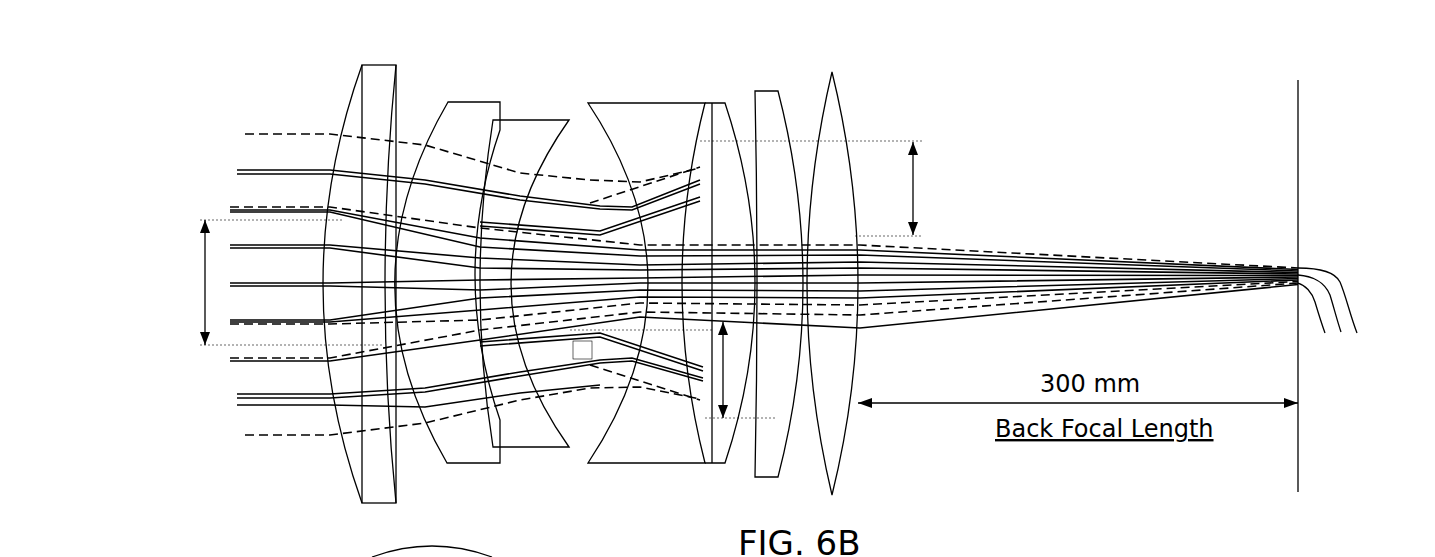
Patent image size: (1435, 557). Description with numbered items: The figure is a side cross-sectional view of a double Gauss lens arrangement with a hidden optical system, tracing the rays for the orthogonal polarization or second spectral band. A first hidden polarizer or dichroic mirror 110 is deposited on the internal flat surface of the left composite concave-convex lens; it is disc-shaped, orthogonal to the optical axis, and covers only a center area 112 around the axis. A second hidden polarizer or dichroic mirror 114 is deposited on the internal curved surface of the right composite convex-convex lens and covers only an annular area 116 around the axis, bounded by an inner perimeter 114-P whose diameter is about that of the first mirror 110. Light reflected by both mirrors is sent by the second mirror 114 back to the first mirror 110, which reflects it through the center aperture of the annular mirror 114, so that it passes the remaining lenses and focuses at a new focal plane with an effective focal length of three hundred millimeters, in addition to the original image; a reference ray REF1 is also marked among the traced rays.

The first hidden polarizer or dichroic mirror 110 is at (366, 224).
The center area 112 is at (203, 284).
The second hidden polarizer or dichroic mirror 114 is at (704, 168).
The inner perimeter 114-P is at (757, 237).
The annular area 116 is at (922, 184).
The reference ray REF1 is at (388, 358).